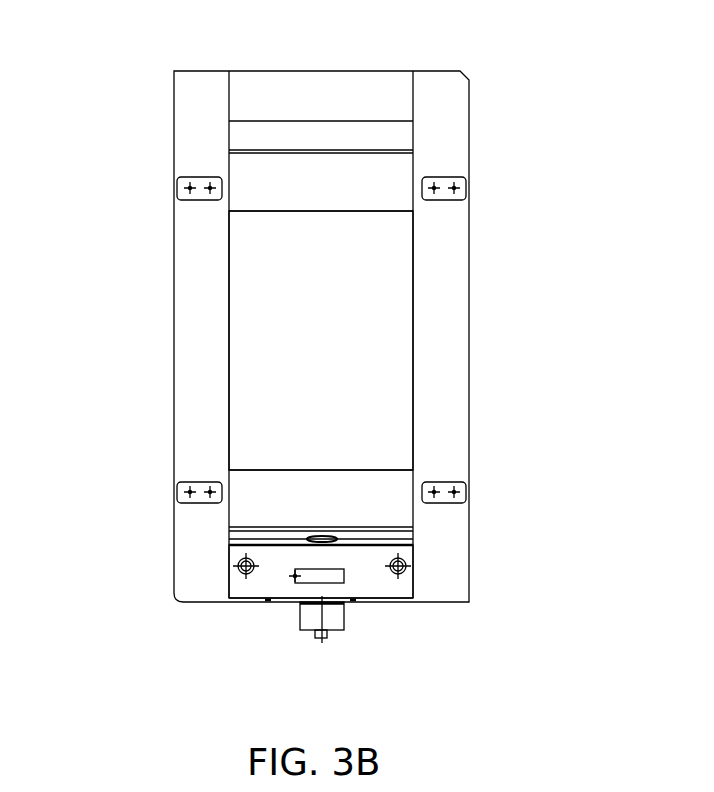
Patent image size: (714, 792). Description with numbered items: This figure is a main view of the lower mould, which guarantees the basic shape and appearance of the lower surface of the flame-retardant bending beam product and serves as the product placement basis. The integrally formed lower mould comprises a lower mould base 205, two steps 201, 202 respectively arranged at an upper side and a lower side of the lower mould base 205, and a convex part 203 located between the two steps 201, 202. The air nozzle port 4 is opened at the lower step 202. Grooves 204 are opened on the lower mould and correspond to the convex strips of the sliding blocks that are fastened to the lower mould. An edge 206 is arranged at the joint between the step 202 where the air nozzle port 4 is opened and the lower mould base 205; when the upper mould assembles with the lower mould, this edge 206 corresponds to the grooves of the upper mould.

The step 201 is at (350, 102).
The step 202 is at (370, 510).
The convex part 203 is at (347, 347).
The grooves 204 is at (182, 502).
The lower mould base 205 is at (193, 395).
The edge 206 is at (246, 602).
The air nozzle port 4 is at (331, 624).